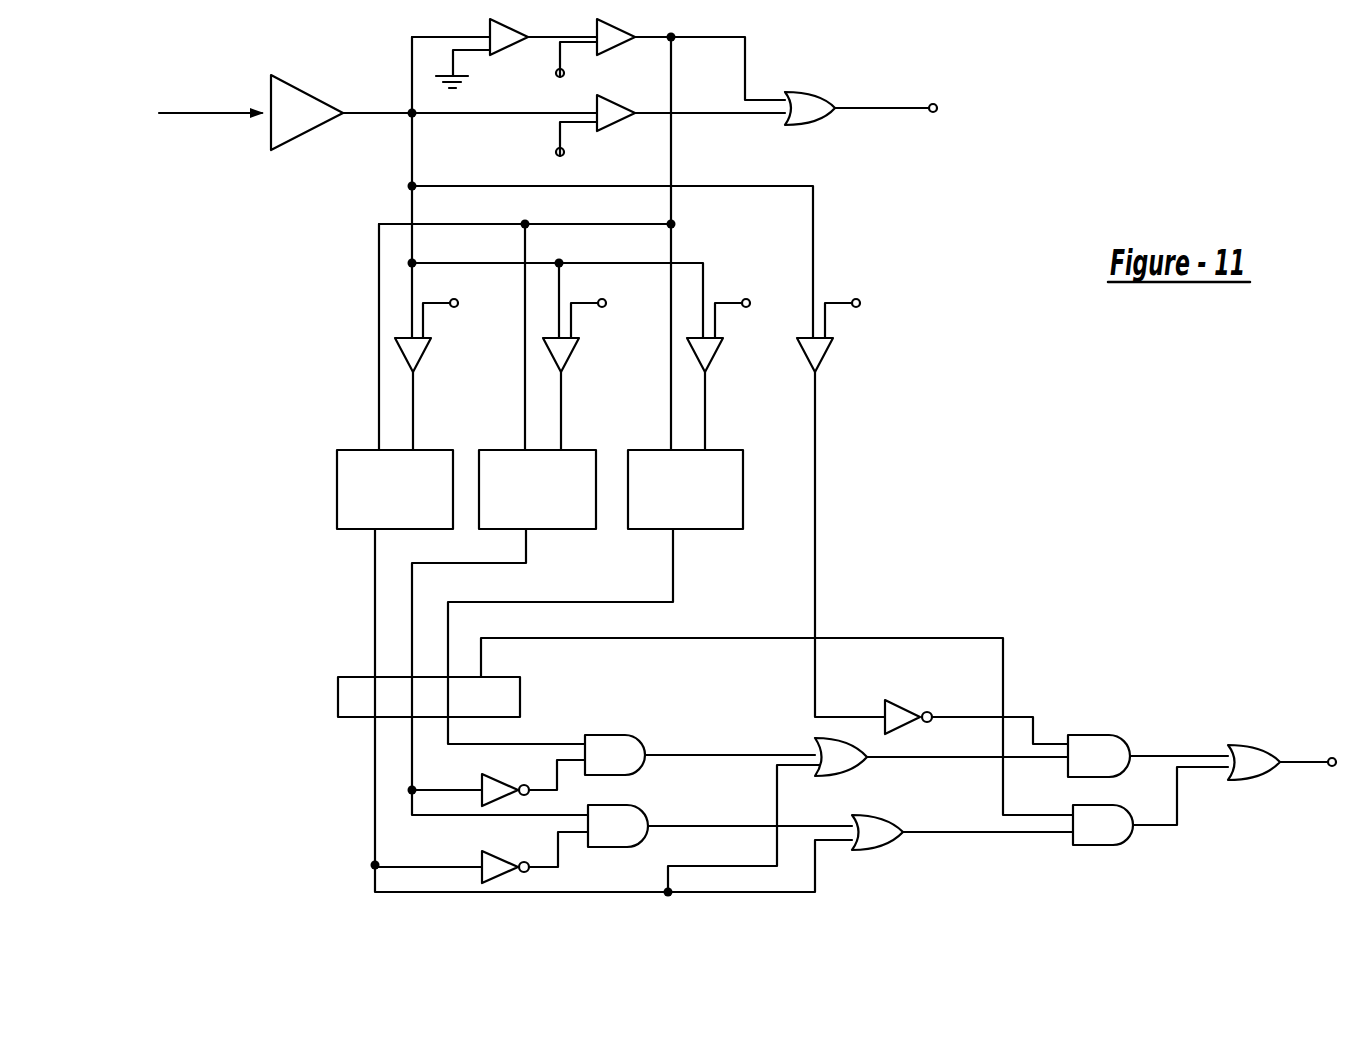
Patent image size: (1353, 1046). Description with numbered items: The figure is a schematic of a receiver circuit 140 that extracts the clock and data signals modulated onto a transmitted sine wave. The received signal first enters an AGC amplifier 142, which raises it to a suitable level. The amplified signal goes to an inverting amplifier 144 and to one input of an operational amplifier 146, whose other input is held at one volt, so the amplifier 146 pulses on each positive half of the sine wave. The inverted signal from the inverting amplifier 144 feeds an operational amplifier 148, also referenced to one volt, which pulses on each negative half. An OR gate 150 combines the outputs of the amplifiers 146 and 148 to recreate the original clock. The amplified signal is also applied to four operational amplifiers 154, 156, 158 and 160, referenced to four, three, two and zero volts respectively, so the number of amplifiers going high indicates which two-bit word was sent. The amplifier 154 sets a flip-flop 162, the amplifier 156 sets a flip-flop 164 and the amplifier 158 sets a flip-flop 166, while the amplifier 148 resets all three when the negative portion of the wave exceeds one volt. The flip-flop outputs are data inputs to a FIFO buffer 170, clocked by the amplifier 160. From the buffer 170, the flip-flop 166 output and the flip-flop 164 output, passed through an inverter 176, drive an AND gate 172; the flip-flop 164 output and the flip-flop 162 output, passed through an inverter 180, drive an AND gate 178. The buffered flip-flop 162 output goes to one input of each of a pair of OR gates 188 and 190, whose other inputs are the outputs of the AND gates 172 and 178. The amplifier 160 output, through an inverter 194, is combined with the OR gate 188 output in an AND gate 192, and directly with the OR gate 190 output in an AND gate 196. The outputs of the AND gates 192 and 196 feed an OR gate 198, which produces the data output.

The receiver circuit 140 is at (1030, 224).
The AGC amplifier 142 is at (310, 100).
The inverting amplifier 144 is at (511, 47).
The operational amplifier 146 is at (620, 120).
The operational amplifier 148 is at (618, 47).
The OR gate 150 is at (812, 92).
The operational amplifier 154 is at (427, 350).
The operational amplifier 156 is at (575, 350).
The operational amplifier 158 is at (719, 350).
The operational amplifier 160 is at (827, 358).
The flip-flop 162 is at (337, 482).
The flip-flop 164 is at (583, 529).
The flip-flop 166 is at (743, 490).
The FIFO buffer 170 is at (338, 683).
The AND gate 172 is at (605, 735).
The inverter 176 is at (503, 775).
The AND gate 178 is at (605, 847).
The inverter 180 is at (500, 852).
The OR gate 188 is at (820, 738).
The OR gate 190 is at (905, 850).
The AND gate 192 is at (1093, 735).
The inverter 194 is at (905, 700).
The AND gate 196 is at (1100, 845).
The OR gate 198 is at (1262, 780).